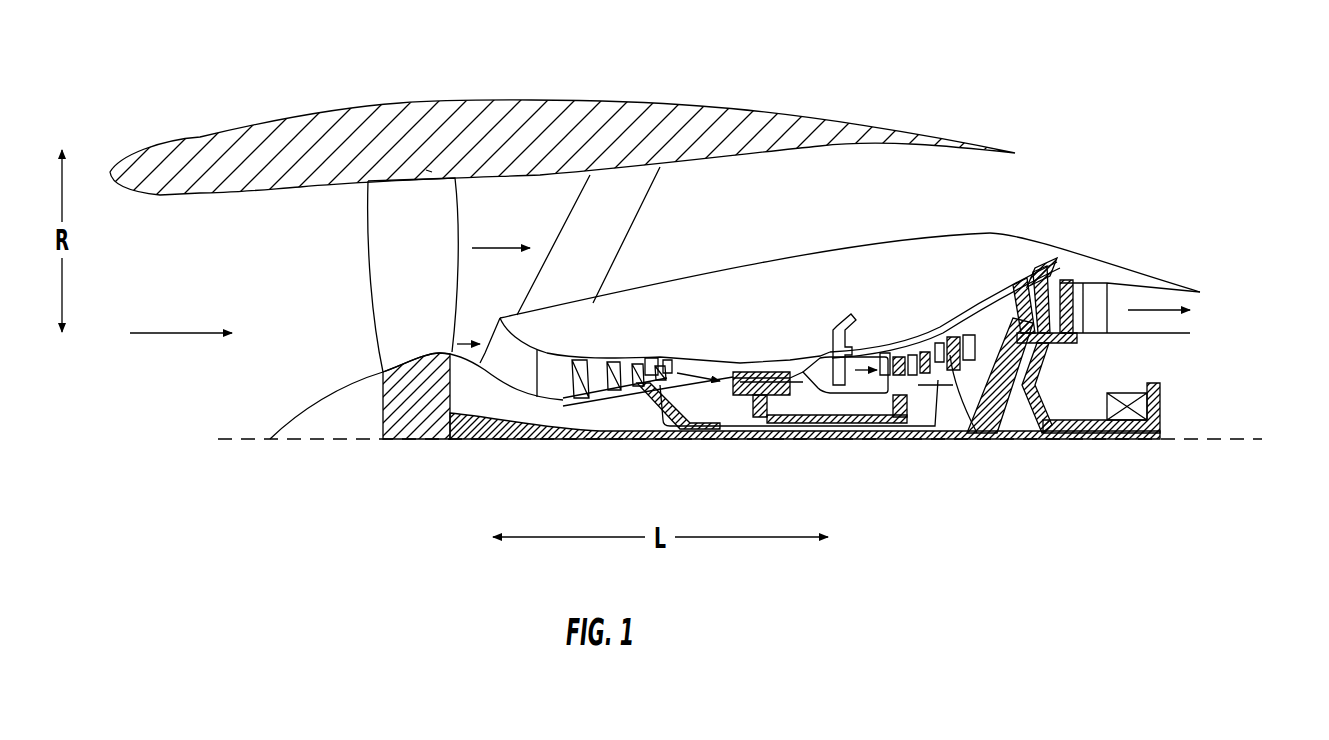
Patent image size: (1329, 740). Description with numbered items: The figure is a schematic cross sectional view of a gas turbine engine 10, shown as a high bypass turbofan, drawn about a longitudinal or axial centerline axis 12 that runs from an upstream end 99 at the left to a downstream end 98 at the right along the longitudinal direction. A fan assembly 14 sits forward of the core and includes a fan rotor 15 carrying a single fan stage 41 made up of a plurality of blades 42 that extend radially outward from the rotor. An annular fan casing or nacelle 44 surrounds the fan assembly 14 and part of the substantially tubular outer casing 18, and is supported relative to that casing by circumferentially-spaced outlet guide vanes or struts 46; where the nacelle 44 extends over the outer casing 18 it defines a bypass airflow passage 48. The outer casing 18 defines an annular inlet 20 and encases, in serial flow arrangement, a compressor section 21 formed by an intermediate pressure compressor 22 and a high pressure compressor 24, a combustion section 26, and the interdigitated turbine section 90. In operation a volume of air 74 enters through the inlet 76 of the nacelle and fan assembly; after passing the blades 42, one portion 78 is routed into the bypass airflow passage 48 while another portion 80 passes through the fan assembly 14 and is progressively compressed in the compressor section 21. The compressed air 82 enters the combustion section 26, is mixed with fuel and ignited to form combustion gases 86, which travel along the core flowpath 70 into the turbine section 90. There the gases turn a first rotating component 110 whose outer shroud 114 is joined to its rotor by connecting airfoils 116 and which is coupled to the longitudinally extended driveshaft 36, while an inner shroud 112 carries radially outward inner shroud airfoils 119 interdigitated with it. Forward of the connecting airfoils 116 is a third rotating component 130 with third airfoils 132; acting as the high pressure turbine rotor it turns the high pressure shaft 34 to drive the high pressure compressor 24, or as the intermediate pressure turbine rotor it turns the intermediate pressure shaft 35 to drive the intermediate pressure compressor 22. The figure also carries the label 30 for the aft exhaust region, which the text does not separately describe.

The gas turbine engine 10 is at (1090, 60).
The axial centerline axis 12 is at (1207, 440).
The fan assembly 14 is at (348, 302).
The fan rotor 15 is at (383, 390).
The outer casing 18 is at (767, 295).
The annular inlet 20 is at (490, 326).
The compressor section 21 is at (663, 333).
The intermediate pressure compressor 22 is at (577, 362).
The high pressure compressor 24 is at (737, 372).
The combustion section 26 is at (862, 327).
The jet exhaust nozzle section 30 is at (1073, 297).
The high pressure shaft 34 is at (750, 405).
The intermediate pressure shaft 35 is at (652, 415).
The driveshaft 36 is at (478, 427).
The fan stage 41 is at (432, 168).
The blades 42 is at (378, 229).
The nacelle 44 is at (327, 122).
The outlet guide vanes 46 is at (571, 254).
The bypass airflow passage 48 is at (686, 229).
The core flowpath 70 is at (513, 357).
The volume of air 74 is at (190, 335).
The inlet 76 is at (213, 268).
The bypass air portion 78 is at (487, 248).
The core air portion 80 is at (460, 345).
The compressed air 82 is at (690, 356).
The combustion gases 86 is at (862, 368).
The turbine section 90 is at (1020, 247).
The downstream end 98 is at (1288, 354).
The upstream end 99 is at (53, 419).
The first rotating component 110 is at (997, 403).
The inner shroud 112 is at (1065, 345).
The outer shroud 114 is at (958, 332).
The connecting airfoils 116 is at (1001, 300).
The inner shroud airfoils 119 is at (1065, 282).
The third rotating component 130 is at (955, 365).
The third airfoils 132 is at (952, 367).